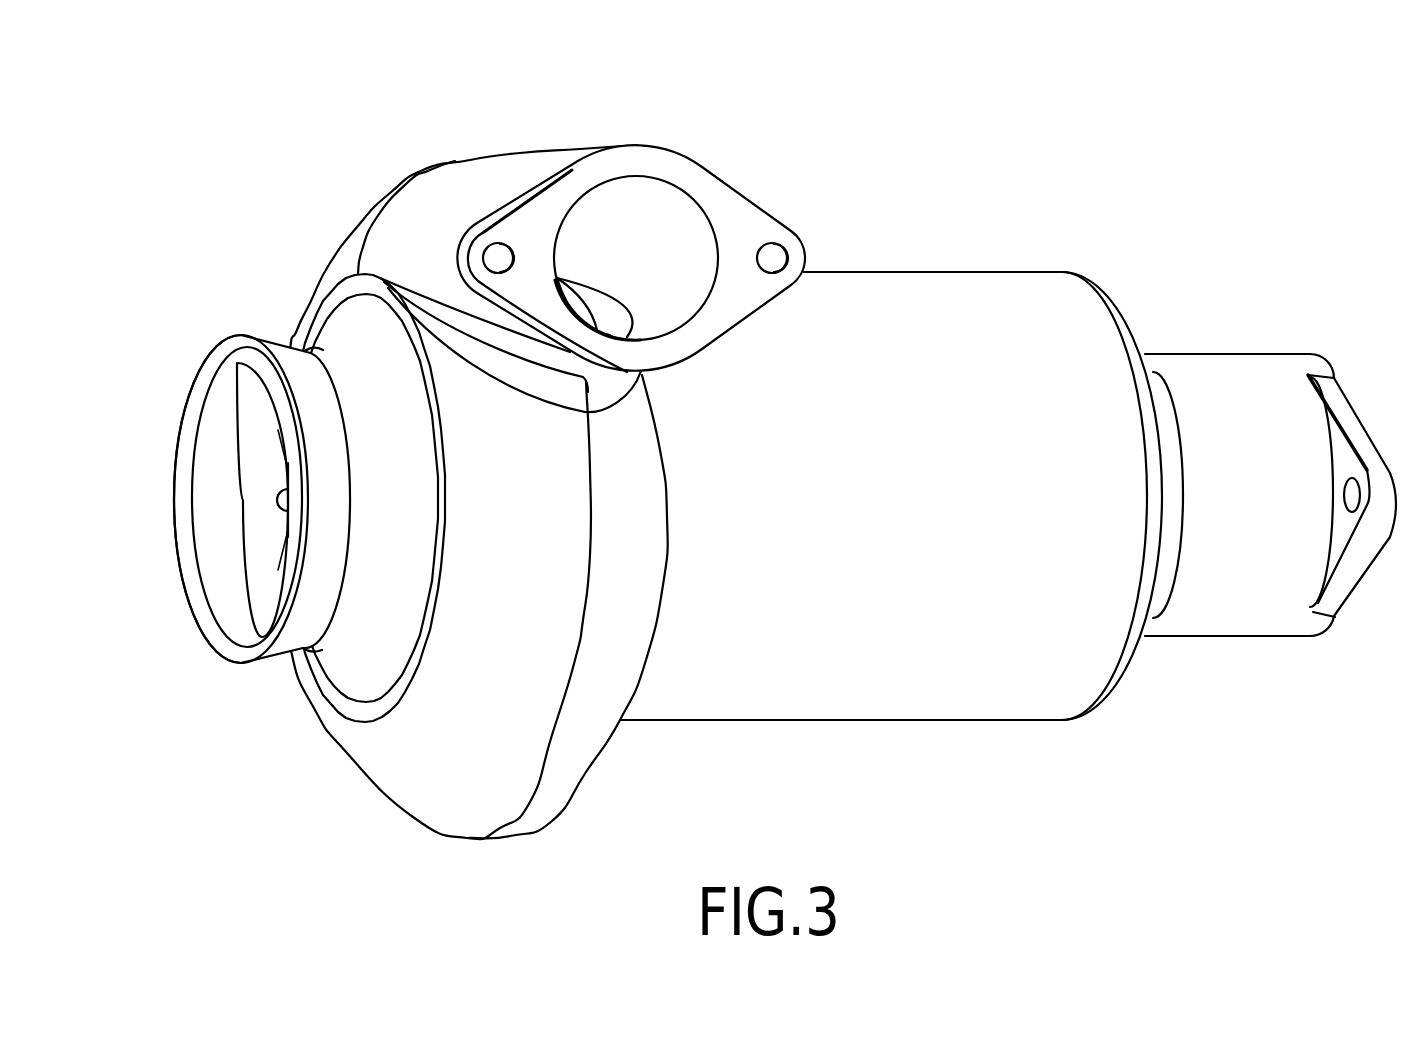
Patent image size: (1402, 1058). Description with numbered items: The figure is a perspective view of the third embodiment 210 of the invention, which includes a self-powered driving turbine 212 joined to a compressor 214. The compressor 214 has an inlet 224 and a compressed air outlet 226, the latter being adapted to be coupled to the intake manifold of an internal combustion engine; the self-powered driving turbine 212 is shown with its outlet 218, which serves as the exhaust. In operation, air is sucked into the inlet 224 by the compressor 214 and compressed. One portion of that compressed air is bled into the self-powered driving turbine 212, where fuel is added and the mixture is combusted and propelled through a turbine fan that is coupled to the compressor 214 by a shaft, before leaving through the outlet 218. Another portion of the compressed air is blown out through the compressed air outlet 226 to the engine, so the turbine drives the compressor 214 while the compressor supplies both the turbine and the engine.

The third embodiment 210 is at (1200, 92).
The self-powered driving turbine 212 is at (938, 497).
The compressor 214 is at (548, 541).
The outlet 218 is at (1260, 370).
The inlet 224 is at (180, 452).
The compressed air outlet 226 is at (657, 238).